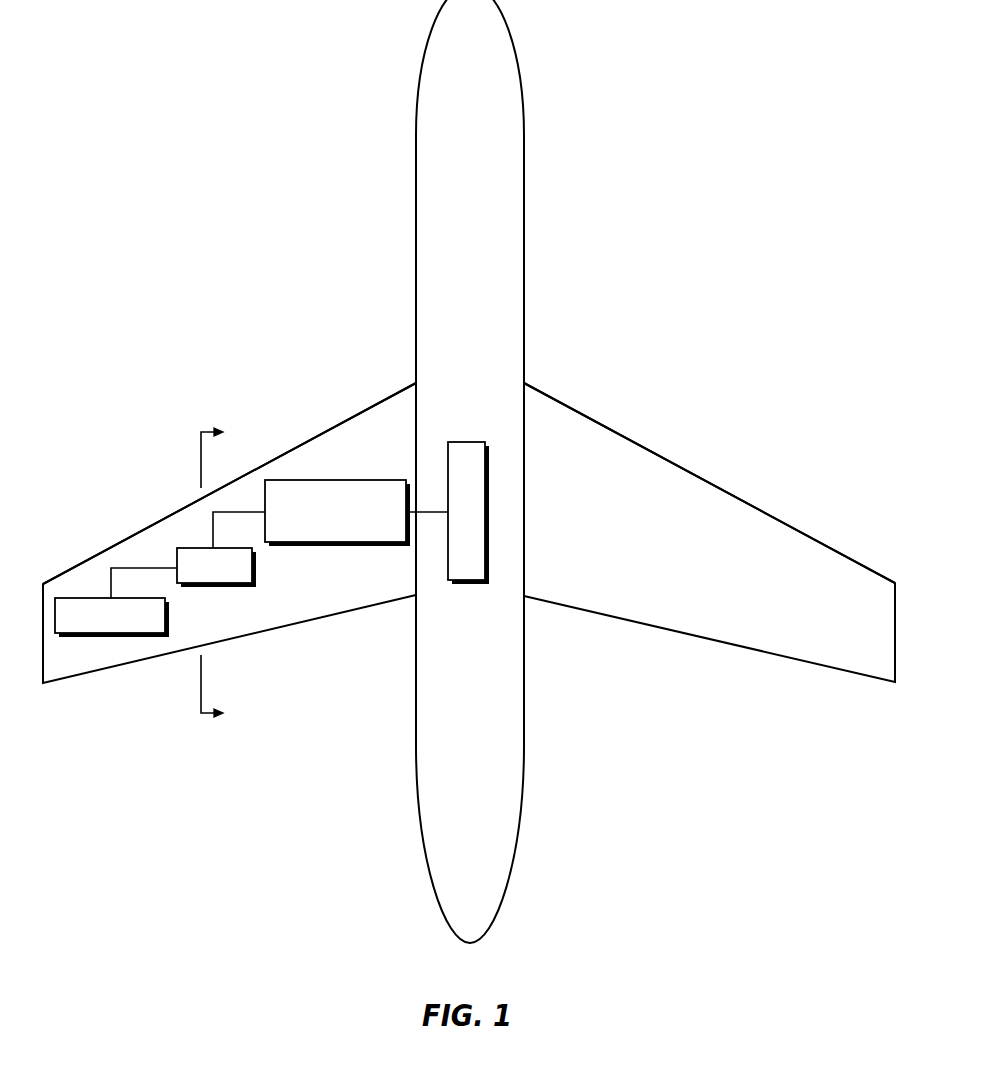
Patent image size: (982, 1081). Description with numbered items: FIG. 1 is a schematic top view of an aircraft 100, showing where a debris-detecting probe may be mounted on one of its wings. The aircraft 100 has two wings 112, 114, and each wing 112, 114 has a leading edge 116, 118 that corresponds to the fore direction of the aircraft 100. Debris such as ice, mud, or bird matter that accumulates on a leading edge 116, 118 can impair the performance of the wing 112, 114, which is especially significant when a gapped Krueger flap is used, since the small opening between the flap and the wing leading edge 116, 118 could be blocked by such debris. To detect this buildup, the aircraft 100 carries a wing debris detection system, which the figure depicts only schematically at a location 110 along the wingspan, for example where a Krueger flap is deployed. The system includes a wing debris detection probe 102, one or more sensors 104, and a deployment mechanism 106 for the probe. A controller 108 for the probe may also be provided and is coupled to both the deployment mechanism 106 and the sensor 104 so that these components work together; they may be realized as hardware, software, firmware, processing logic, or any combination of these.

The aircraft 100 is at (280, 132).
The wing debris detection probe 102 is at (194, 548).
The sensor 104 is at (87, 598).
The deployment mechanism 106 is at (296, 480).
The controller 108 is at (467, 442).
The location 110 is at (200, 445).
The wing 112 is at (548, 420).
The wing 114 is at (385, 420).
The leading edge 116 is at (603, 423).
The leading edge 118 is at (333, 427).